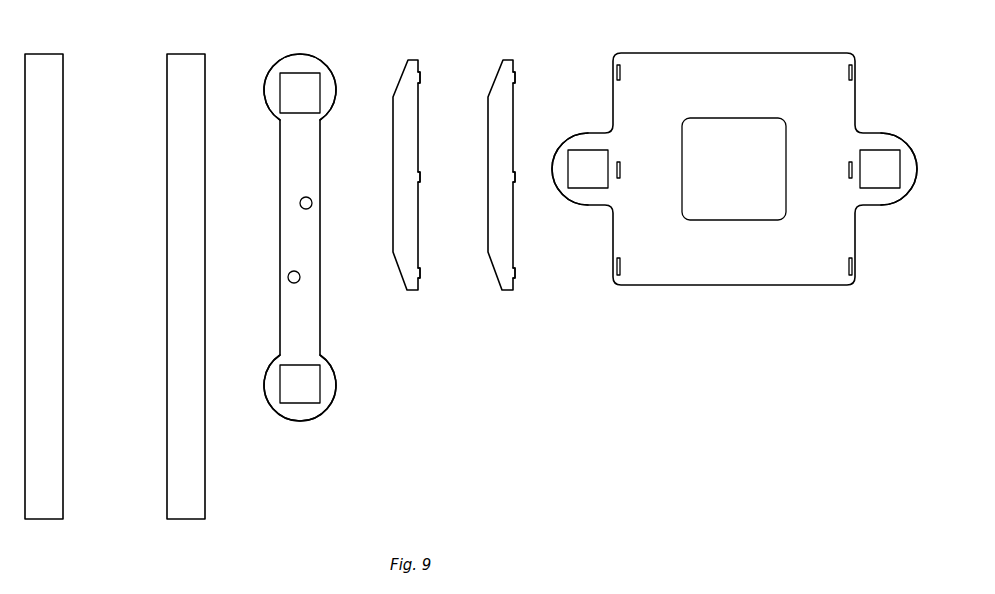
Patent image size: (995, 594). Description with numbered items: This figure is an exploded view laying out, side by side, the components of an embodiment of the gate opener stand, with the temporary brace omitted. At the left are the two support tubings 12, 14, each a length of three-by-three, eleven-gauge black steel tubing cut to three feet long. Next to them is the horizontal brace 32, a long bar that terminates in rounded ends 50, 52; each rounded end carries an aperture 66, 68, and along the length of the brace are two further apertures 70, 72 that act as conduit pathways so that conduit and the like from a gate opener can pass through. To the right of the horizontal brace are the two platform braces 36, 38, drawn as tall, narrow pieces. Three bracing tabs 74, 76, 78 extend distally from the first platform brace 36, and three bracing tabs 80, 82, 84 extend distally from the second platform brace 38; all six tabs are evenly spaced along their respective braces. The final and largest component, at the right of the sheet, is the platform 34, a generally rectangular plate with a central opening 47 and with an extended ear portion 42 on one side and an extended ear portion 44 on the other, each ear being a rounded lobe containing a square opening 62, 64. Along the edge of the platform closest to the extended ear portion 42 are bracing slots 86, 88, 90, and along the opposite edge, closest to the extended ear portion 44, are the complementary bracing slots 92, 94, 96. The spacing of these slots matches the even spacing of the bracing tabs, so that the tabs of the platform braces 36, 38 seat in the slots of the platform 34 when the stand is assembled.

The support tubing 12 is at (63, 252).
The support tubing 14 is at (167, 306).
The horizontal brace 32 is at (280, 172).
The platform 34 is at (745, 286).
The platform brace 36 is at (413, 290).
The platform brace 38 is at (508, 290).
The extended ear portion 42 is at (593, 134).
The extended ear portion 44 is at (893, 136).
The central opening 47 is at (722, 122).
The rounded end 50 is at (266, 91).
The rounded end 52 is at (269, 372).
The first aperture 62 is at (590, 190).
The second aperture 64 is at (882, 190).
The aperture 66 is at (305, 85).
The aperture 68 is at (302, 403).
The aperture 70 is at (311, 199).
The aperture 72 is at (289, 277).
The bracing tab 74 is at (421, 78).
The bracing tab 76 is at (421, 175).
The bracing tab 78 is at (421, 270).
The bracing tab 80 is at (516, 78).
The bracing tab 82 is at (516, 175).
The bracing tab 84 is at (516, 270).
The bracing slot 86 is at (623, 72).
The bracing slot 88 is at (623, 171).
The bracing slot 90 is at (623, 266).
The bracing slot 92 is at (847, 72).
The bracing slot 94 is at (847, 170).
The bracing slot 96 is at (847, 266).